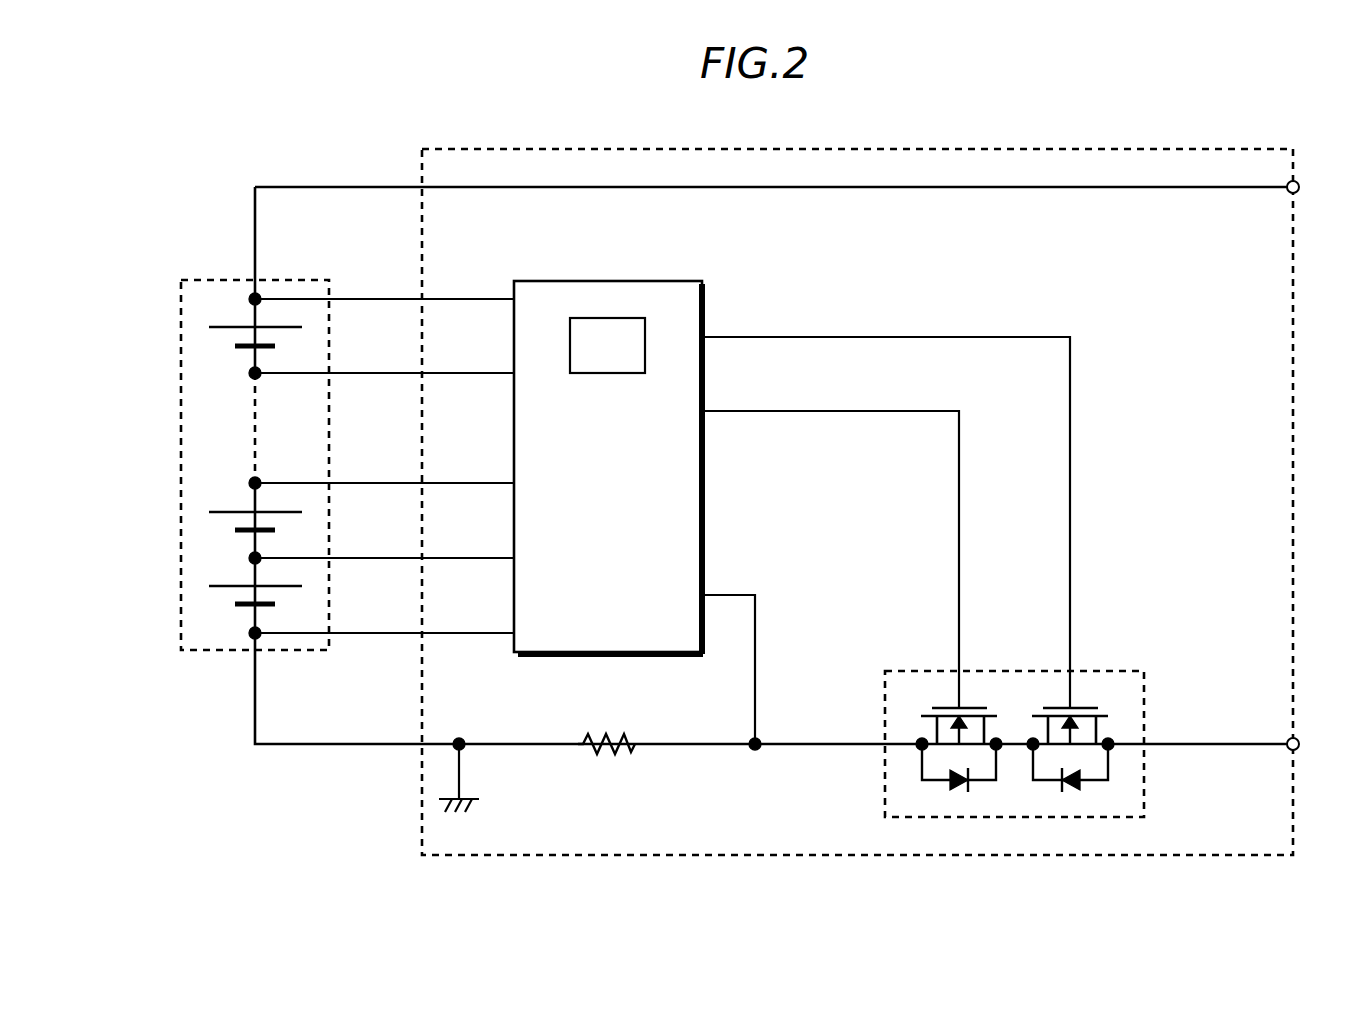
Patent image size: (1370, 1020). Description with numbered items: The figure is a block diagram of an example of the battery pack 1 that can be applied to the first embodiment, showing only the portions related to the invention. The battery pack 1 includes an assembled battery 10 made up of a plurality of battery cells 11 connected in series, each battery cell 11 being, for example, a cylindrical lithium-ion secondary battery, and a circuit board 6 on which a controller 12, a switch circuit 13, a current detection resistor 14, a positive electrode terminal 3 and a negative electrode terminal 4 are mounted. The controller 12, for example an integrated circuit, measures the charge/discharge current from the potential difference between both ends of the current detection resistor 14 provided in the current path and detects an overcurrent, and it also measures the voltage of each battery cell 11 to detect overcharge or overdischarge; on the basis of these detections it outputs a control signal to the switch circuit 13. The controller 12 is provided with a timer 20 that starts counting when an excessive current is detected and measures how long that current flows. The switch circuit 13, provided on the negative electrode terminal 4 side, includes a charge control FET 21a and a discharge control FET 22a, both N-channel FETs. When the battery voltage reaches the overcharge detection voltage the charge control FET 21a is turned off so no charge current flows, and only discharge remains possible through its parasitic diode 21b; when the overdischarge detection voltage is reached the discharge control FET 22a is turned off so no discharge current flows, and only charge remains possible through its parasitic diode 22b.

The battery pack 1 is at (1230, 107).
The positive electrode terminal 3 is at (1299, 183).
The negative electrode terminal 4 is at (1299, 740).
The circuit board 6 is at (1293, 272).
The assembled battery 10 is at (226, 438).
The battery cell 11 is at (217, 336).
The controller 12 is at (651, 452).
The switch circuit 13 is at (1110, 671).
The current detection resistor 14 is at (635, 748).
The timer 20 is at (612, 318).
The charge control FET 21a is at (1086, 716).
The parasitic diode 21b is at (1090, 784).
The discharge control FET 22a is at (940, 716).
The parasitic diode 22b is at (945, 784).